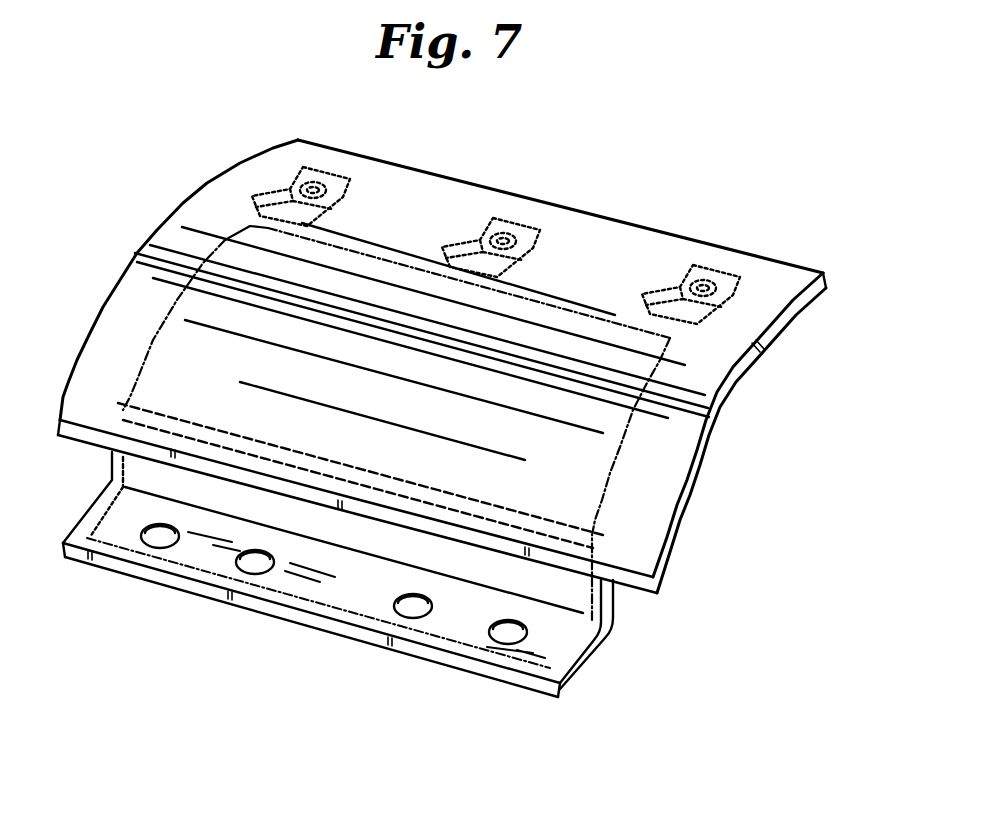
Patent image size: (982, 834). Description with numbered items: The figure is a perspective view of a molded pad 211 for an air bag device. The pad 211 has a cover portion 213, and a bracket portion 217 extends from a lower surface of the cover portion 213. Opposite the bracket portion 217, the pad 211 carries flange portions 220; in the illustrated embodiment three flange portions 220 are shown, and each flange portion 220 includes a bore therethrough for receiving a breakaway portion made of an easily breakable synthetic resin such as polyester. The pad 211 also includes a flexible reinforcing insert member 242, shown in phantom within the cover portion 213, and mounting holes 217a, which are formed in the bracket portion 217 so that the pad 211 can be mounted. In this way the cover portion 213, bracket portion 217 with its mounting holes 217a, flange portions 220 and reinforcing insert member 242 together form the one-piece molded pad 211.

The pad 211 is at (432, 194).
The cover portion 213 is at (587, 216).
The flange portions 220 is at (726, 278).
The flexible reinforcing insert member 242 is at (618, 452).
The bracket portion 217 is at (570, 641).
The mounting holes 217a is at (505, 640).